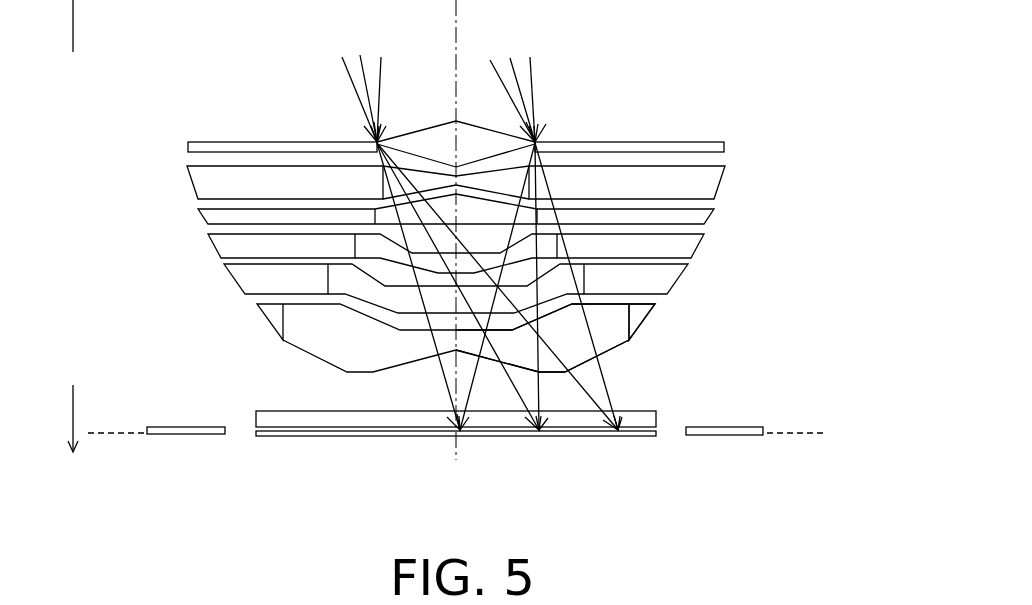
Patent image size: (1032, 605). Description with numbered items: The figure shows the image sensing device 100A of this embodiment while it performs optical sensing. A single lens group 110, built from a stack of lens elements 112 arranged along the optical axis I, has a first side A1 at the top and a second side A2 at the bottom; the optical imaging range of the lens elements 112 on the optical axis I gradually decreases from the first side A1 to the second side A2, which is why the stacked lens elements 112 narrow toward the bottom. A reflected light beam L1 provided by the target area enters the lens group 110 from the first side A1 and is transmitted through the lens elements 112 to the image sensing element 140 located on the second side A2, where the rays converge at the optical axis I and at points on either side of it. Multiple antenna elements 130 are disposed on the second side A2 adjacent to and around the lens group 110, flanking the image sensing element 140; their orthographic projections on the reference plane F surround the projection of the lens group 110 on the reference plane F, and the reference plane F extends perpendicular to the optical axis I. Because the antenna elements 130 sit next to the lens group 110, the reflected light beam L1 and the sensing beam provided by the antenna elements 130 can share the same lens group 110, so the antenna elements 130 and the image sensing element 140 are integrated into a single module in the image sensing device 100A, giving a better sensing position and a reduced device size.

The lens group 110 is at (765, 107).
The lens elements 112 is at (617, 330).
The antenna elements 130 is at (200, 434).
The image sensing element 140 is at (362, 438).
The reflected light beam L1 is at (352, 88).
The reference plane F is at (465, 431).
The optical axis I is at (535, 460).
The first side A1 is at (52, 26).
The second side A2 is at (54, 418).
The image sensing device 100A is at (915, 543).